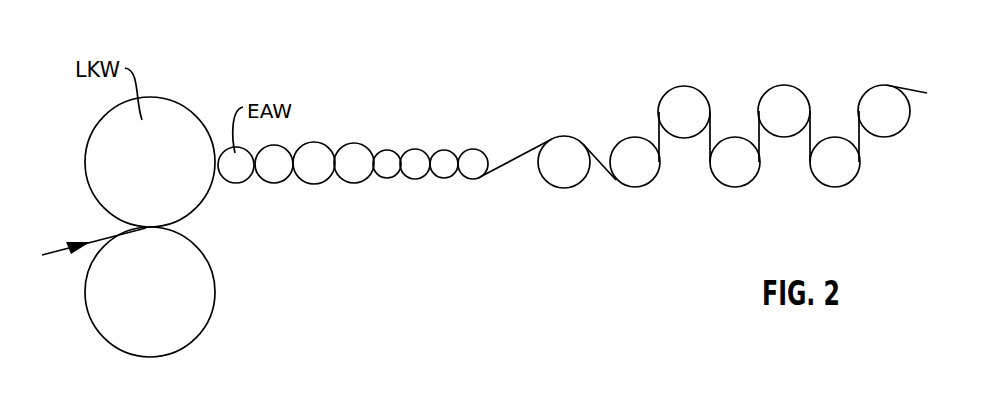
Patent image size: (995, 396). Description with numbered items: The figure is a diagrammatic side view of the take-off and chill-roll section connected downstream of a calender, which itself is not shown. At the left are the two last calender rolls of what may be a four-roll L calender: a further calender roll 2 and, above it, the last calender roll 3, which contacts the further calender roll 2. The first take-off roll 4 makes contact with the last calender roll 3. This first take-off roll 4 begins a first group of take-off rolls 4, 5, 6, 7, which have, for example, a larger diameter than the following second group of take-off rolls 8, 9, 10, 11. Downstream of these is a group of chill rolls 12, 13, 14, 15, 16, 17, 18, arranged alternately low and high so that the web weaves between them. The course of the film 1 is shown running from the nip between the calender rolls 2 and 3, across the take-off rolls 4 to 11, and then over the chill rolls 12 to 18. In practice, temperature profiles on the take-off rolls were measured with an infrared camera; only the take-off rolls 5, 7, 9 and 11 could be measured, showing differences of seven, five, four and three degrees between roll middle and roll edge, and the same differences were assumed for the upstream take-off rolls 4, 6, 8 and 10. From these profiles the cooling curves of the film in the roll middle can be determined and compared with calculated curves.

The film 1 is at (520, 150).
The calender roll 2 is at (207, 305).
The last calender roll 3 is at (163, 108).
The first take-off roll 4 is at (232, 177).
The take-off roll 5 is at (273, 173).
The take-off roll 6 is at (315, 152).
The take-off roll 7 is at (352, 172).
The take-off roll 8 is at (387, 157).
The take-off roll 9 is at (412, 170).
The take-off roll 10 is at (443, 157).
The take-off roll 11 is at (472, 170).
The chill roll 12 is at (563, 178).
The chill roll 13 is at (647, 175).
The chill roll 14 is at (683, 92).
The chill roll 15 is at (737, 177).
The chill roll 16 is at (785, 95).
The chill roll 17 is at (840, 177).
The chill roll 18 is at (882, 95).